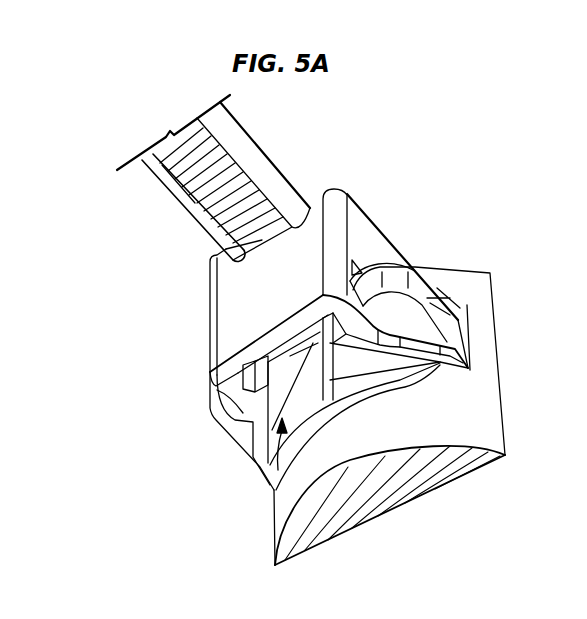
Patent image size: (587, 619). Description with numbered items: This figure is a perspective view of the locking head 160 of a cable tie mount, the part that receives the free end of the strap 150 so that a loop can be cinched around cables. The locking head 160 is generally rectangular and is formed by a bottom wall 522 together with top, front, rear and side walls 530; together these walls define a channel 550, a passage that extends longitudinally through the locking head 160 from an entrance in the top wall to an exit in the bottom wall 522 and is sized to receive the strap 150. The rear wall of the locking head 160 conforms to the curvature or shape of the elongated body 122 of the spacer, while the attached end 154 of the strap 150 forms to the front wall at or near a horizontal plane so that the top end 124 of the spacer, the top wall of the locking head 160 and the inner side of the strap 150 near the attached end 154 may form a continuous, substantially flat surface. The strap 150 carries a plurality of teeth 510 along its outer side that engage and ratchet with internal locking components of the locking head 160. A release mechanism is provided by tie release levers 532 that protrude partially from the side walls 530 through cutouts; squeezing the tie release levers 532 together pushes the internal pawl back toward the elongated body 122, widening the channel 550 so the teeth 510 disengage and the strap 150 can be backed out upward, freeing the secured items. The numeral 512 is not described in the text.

The elongated body 122 is at (480, 423).
The top end 124 is at (360, 205).
The strap 150 is at (190, 215).
The attached end 154 is at (263, 243).
The locking head 160 is at (111, 412).
The teeth 510 is at (225, 187).
The arm base 512 is at (248, 295).
The bottom wall 522 is at (427, 352).
The side walls 530 is at (232, 440).
The tie release levers 532 is at (363, 262).
The channel 550 is at (262, 467).